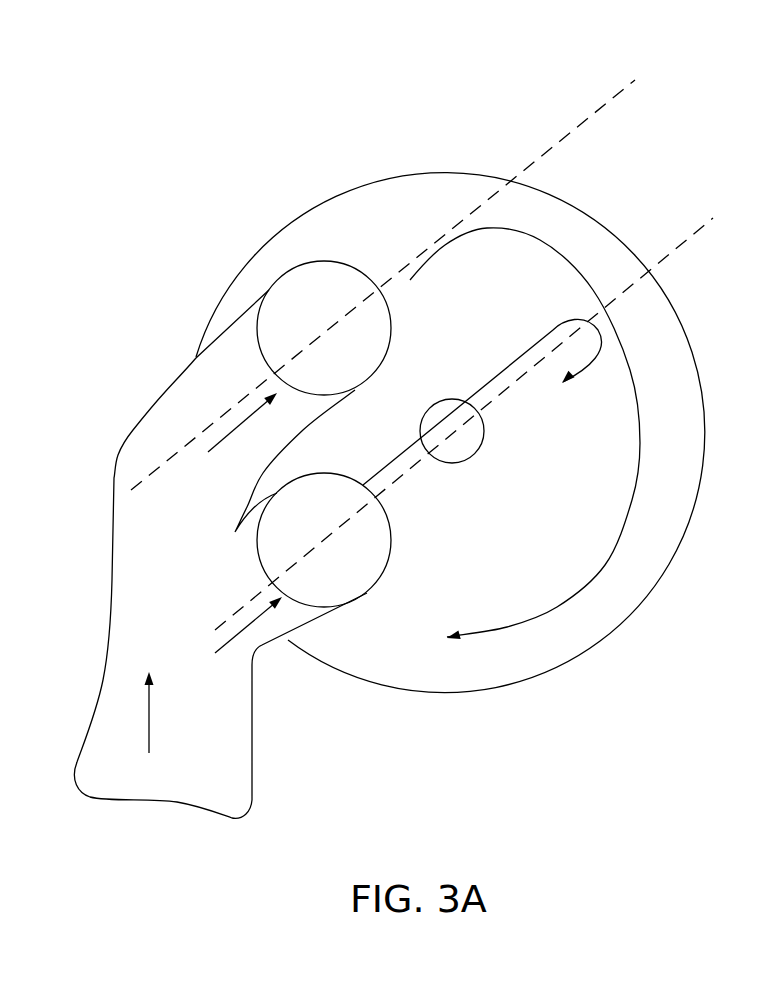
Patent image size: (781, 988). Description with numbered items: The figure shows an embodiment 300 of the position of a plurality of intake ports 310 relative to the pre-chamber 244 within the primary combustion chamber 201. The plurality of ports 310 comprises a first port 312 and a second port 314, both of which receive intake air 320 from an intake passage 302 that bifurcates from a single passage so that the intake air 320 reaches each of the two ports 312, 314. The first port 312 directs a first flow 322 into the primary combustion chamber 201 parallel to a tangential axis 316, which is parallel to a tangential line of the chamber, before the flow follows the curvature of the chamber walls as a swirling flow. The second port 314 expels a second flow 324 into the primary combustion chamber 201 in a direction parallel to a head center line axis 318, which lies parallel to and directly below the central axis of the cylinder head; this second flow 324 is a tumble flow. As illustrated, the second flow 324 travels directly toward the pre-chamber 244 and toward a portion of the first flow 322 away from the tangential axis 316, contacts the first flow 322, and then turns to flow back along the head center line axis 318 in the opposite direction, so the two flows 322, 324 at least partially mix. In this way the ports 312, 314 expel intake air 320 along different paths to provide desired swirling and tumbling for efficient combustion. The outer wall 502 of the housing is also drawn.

The embodiment 300 is at (707, 64).
The plurality of intake ports 310 is at (204, 270).
The primary combustion chamber 201 is at (362, 185).
The outer wall 502 is at (605, 640).
The first flow 322 is at (637, 387).
The first port 312 is at (340, 262).
The second port 314 is at (330, 473).
The pre-chamber 244 is at (457, 464).
The tangential axis 316 is at (597, 112).
The head center line axis 318 is at (692, 232).
The second flow 324 is at (561, 328).
The intake air 320 is at (236, 432).
The intake passage 302 is at (213, 792).